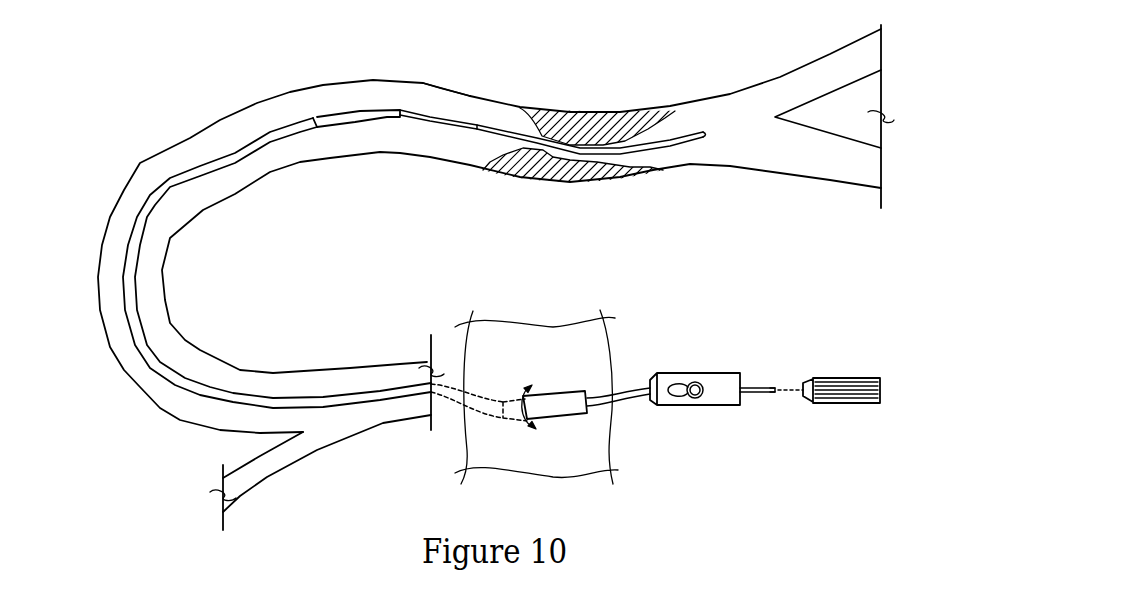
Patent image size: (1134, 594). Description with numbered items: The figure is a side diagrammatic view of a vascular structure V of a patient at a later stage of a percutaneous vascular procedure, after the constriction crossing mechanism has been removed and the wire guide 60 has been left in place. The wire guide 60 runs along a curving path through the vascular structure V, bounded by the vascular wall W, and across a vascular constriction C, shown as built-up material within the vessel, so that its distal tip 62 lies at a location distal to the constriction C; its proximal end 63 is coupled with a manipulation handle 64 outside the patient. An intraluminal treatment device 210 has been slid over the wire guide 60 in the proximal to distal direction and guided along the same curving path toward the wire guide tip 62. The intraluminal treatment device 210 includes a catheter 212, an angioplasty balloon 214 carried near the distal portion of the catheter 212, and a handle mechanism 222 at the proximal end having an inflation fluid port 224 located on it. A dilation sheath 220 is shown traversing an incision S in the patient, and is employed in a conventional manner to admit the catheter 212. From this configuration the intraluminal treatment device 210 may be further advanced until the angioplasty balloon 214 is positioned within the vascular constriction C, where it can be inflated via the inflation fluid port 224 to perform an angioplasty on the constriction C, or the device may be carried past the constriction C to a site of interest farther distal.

The vascular structure V is at (375, 79).
The vascular wall W is at (427, 89).
The vascular constriction C is at (483, 184).
The incision S is at (535, 429).
The wire guide 60 is at (676, 147).
The distal tip 62 is at (705, 136).
The guidewire proximal end 63 is at (777, 394).
The manipulation handle 64 is at (849, 399).
The intraluminal treatment device 210 is at (397, 119).
The catheter 212 is at (287, 134).
The angioplasty balloon 214 is at (345, 122).
The dilation sheath 220 is at (565, 400).
The handle mechanism 222 is at (685, 412).
The inflation fluid port 224 is at (699, 383).